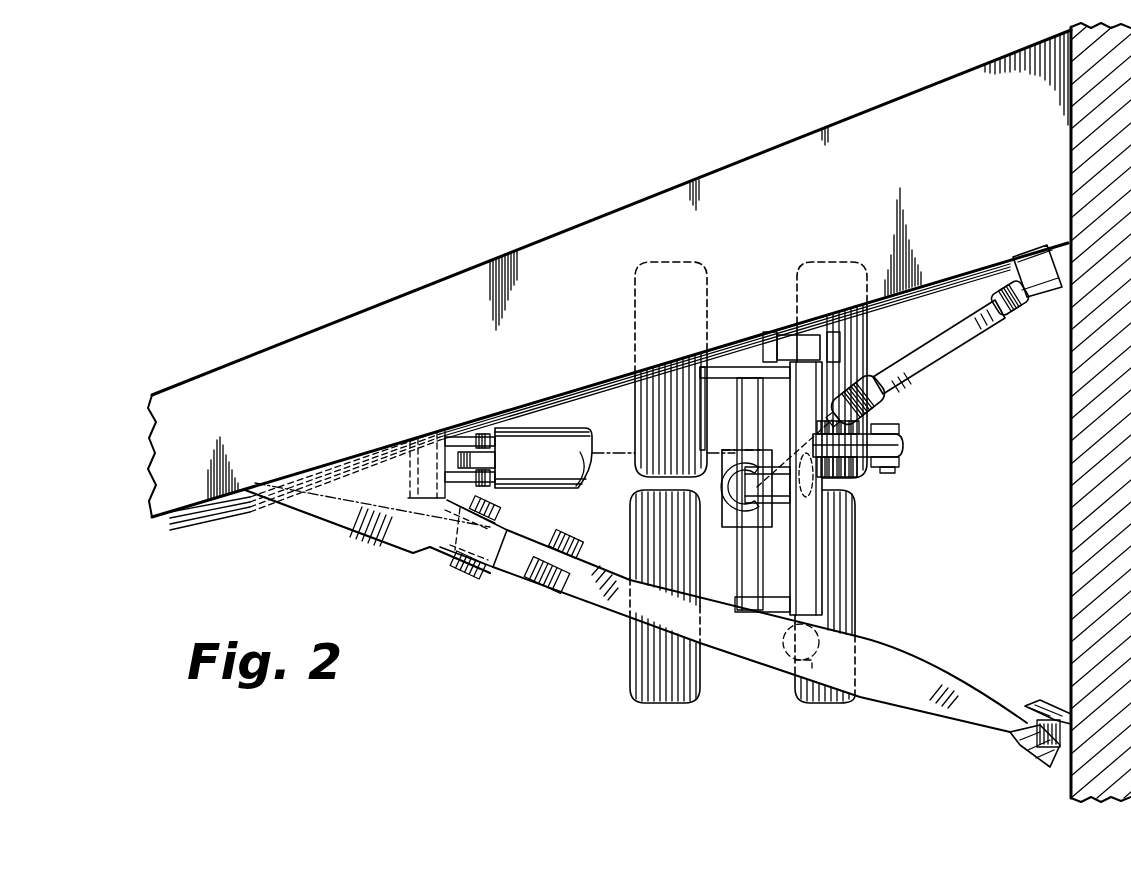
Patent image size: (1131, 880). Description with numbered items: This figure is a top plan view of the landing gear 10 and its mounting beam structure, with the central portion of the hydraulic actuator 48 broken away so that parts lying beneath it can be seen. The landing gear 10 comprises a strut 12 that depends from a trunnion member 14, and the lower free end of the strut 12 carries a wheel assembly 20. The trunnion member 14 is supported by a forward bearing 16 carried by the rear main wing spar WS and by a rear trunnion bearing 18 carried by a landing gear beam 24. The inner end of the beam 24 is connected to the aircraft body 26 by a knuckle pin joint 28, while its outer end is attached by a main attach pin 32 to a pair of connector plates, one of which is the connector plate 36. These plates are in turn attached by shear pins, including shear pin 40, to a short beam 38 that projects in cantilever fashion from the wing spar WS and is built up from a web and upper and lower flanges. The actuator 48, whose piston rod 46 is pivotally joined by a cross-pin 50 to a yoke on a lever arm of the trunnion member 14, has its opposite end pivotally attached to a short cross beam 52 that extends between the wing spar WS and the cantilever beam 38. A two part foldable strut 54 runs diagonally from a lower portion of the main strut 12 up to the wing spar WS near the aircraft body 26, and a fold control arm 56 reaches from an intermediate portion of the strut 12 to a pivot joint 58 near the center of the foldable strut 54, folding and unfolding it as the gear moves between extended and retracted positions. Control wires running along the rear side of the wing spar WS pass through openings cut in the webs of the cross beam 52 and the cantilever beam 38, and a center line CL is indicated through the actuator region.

The landing gear 10 is at (872, 549).
The strut 12 is at (720, 505).
The trunnion member 14 is at (803, 573).
The forward bearing 16 is at (795, 343).
The rear trunnion bearing 18 is at (790, 647).
The wheel assembly 20 is at (860, 512).
The landing gear beam 24 is at (898, 690).
The aircraft body 26 is at (1068, 585).
The knuckle pin joint 28 is at (1000, 746).
The main attach pin 32 is at (543, 590).
The connector plate 36 is at (528, 532).
The short beam 38 is at (393, 533).
The shear pin 40 is at (463, 560).
The piston rod 46 is at (878, 468).
The actuator 48 is at (540, 447).
The cross-pin 50 is at (897, 426).
The short cross beam 52 is at (408, 480).
The foldable strut 54 is at (943, 362).
The fold control arm 56 is at (833, 420).
The pivot joint 58 is at (873, 373).
The rear main wing spar WS is at (218, 505).
The center line CL is at (582, 390).